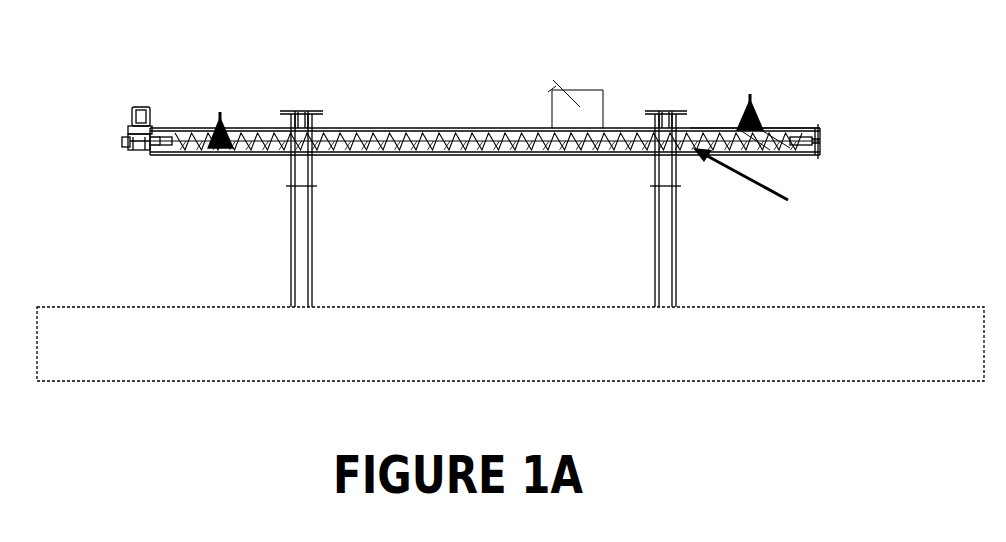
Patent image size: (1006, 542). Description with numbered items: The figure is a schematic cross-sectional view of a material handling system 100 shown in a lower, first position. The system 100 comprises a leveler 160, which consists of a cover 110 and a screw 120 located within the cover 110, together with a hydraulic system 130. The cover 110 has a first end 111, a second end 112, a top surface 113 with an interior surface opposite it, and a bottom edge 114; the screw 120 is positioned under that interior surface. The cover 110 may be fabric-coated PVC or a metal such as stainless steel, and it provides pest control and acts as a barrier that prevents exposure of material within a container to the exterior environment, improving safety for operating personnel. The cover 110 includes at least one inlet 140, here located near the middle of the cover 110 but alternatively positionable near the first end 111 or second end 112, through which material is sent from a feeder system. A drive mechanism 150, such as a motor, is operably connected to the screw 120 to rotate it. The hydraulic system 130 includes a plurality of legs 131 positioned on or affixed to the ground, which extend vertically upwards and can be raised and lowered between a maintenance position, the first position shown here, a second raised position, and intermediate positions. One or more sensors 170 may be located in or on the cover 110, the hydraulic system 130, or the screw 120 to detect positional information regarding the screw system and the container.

The material handling system 100 is at (623, 52).
The cover 110 is at (176, 128).
The first end 111 is at (812, 150).
The second end 112 is at (150, 150).
The top surface 113 is at (265, 128).
The bottom edge 114 is at (262, 152).
The screw 120 is at (700, 130).
The hydraulic system 130 is at (342, 242).
The legs 131 is at (303, 292).
The inlet 140 is at (569, 91).
The drive mechanism 150 is at (114, 112).
The leveler 160 is at (762, 188).
The sensors 170 is at (214, 118).